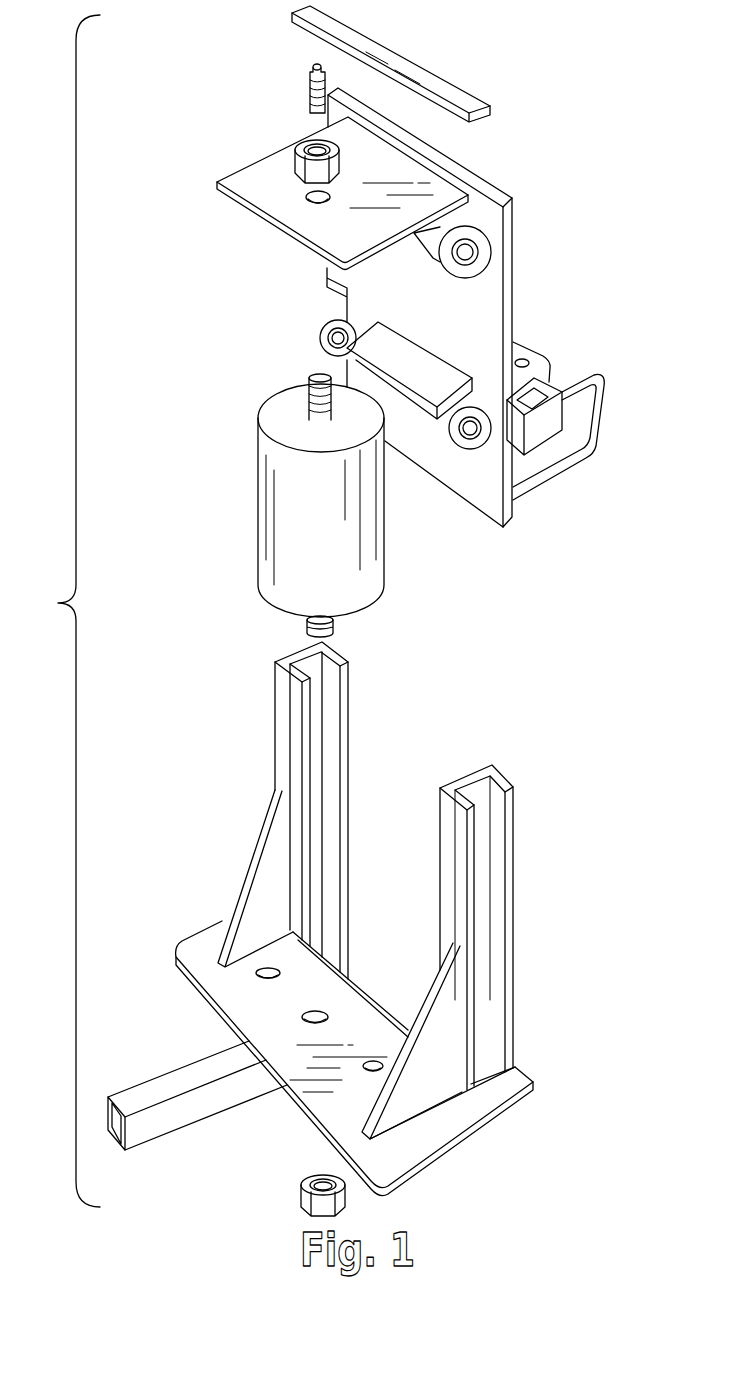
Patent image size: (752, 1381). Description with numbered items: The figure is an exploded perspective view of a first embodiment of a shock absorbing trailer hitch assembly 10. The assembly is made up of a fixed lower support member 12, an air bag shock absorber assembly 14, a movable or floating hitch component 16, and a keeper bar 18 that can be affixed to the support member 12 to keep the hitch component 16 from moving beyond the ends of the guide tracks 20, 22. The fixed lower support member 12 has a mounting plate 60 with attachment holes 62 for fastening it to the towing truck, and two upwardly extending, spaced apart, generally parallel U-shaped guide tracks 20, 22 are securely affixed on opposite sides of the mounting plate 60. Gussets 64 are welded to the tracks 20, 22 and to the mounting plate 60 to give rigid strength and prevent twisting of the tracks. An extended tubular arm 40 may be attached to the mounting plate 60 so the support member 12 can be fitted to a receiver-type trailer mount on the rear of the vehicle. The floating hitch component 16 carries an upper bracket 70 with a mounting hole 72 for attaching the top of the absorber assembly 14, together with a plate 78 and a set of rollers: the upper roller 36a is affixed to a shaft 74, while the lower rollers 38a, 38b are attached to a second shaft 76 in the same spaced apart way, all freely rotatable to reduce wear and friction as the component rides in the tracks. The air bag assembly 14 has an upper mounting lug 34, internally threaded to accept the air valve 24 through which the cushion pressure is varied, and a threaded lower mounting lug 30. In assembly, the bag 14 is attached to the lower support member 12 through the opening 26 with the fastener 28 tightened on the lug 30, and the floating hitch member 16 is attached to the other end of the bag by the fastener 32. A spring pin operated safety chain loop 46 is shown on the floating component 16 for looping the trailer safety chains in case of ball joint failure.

The shock absorbing trailer hitch assembly 10 is at (54, 603).
The fixed lower support member 12 is at (552, 955).
The air bag shock absorber assembly 14 is at (280, 516).
The floating hitch component 16 is at (425, 266).
The keeper bar 18 is at (448, 90).
The guide track 20 is at (497, 890).
The guide track 22 is at (280, 713).
The air valve 24 is at (311, 79).
The opening 26 is at (300, 1013).
The fastener 28 is at (298, 1195).
The lower mounting lug 30 is at (334, 631).
The fastener 32 is at (305, 162).
The upper mounting lug 34 is at (308, 397).
The upper roller 36a is at (493, 256).
The lower roller 38a is at (452, 446).
The lower roller 38b is at (322, 338).
The extended tubular arm 40 is at (185, 1083).
The safety chain loop 46 is at (598, 412).
The mounting plate 60 is at (193, 950).
The attachment holes 62 is at (280, 971).
The gussets 64 is at (252, 878).
The upper bracket 70 is at (381, 175).
The mounting hole 72 is at (331, 195).
The shaft 74 is at (428, 245).
The second shaft 76 is at (346, 330).
The vertical plate 78 is at (522, 268).